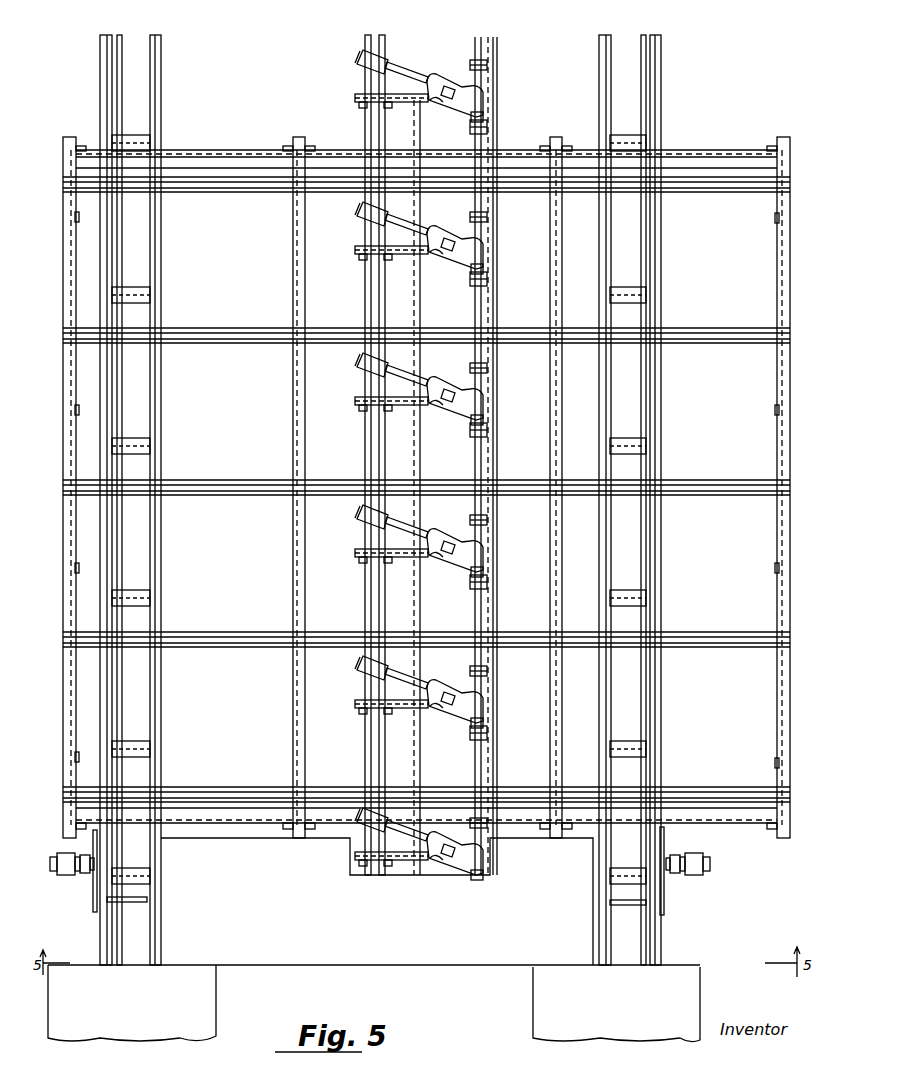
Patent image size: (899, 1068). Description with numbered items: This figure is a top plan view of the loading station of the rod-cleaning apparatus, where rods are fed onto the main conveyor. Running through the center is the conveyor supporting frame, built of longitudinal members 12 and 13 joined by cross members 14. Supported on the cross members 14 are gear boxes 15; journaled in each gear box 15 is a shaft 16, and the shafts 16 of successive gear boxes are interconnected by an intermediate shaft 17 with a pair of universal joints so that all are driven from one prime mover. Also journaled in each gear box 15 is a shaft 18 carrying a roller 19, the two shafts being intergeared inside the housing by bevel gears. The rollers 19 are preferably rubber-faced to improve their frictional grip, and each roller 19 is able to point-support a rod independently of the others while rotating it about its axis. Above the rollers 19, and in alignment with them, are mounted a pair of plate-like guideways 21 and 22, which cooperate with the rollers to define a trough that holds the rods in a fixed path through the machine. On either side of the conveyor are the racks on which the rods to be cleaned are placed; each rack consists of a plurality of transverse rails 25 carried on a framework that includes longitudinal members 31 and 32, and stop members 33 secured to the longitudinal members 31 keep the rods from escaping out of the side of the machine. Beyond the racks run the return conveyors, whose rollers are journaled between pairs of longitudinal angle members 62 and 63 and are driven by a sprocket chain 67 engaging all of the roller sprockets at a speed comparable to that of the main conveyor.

The longitudinal member 12 is at (418, 749).
The longitudinal member 13 is at (487, 742).
The cross member 14 is at (402, 105).
The gear box 15 is at (433, 78).
The shaft 16 is at (489, 426).
The intermediate shaft 17 is at (484, 466).
The shaft 18 is at (394, 66).
The roller 19 is at (360, 212).
The guideway 21 is at (365, 611).
The guideway 22 is at (381, 610).
The transverse rail 25 is at (733, 192).
The longitudinal member 31 is at (66, 390).
The longitudinal member 32 is at (295, 412).
The stop member 33 is at (80, 220).
The longitudinal angle member 62 is at (107, 92).
The longitudinal angle member 63 is at (162, 88).
The sprocket chain 67 is at (648, 412).